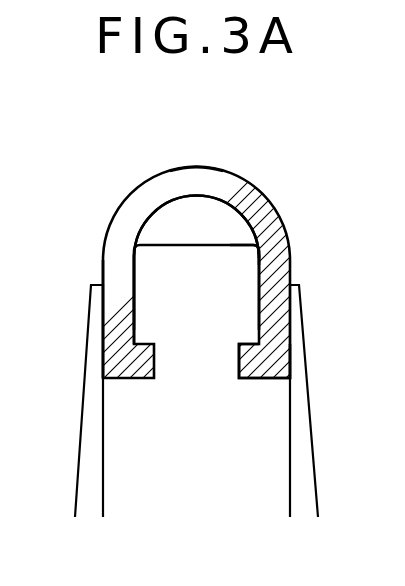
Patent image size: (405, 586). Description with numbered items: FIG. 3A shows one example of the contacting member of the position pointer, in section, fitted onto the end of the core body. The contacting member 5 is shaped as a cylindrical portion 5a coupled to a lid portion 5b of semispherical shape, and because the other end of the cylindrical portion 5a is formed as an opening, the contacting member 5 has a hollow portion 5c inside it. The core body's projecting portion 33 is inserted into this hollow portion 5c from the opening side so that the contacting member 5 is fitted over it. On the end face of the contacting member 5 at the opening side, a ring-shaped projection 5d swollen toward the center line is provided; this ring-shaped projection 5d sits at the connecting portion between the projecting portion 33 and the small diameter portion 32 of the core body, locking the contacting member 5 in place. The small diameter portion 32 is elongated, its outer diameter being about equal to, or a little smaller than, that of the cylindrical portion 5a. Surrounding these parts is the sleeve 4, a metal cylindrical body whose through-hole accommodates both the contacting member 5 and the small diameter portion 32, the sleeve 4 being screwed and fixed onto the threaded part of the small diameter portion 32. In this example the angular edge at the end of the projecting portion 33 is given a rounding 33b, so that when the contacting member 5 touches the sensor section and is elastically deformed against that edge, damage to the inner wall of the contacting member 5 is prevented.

The sleeve 4 is at (92, 445).
The contacting member 5 is at (268, 195).
The cylindrical portion 5a is at (117, 270).
The lid portion 5b is at (197, 185).
The hollow portion 5c is at (168, 227).
The ring-shaped projection 5d is at (248, 362).
The small diameter portion 32 is at (270, 437).
The projecting portion 33 is at (227, 272).
The rounding 33b is at (257, 240).